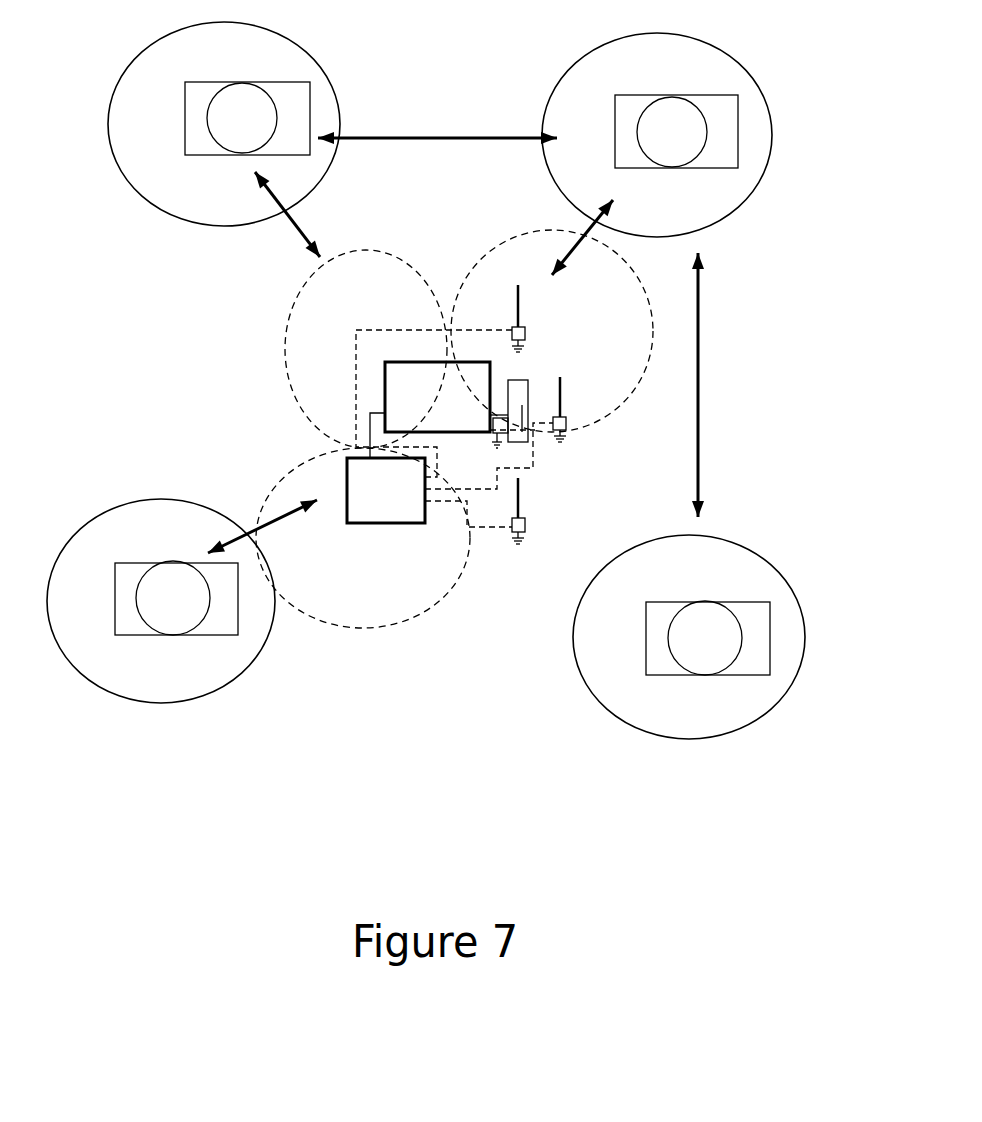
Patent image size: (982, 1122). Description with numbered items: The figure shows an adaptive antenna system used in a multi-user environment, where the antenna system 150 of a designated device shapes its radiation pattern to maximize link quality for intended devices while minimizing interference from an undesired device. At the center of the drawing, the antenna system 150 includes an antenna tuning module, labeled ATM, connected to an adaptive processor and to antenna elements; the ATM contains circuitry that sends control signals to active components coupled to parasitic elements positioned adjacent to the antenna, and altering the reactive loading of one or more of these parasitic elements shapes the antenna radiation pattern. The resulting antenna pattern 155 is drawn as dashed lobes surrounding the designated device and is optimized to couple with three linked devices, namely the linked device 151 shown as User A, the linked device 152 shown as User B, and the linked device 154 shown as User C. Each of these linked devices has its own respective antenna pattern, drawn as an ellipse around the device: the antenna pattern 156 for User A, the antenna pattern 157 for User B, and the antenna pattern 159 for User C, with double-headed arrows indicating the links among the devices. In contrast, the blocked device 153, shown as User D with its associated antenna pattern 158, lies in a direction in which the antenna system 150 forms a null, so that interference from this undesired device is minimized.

The antenna system 150 is at (470, 537).
The linked device 151 is at (208, 157).
The linked device 152 is at (705, 172).
The blocked device 153 is at (705, 603).
The linked device 154 is at (142, 560).
The antenna pattern 155 is at (345, 628).
The antenna pattern 156 is at (128, 192).
The antenna pattern 157 is at (773, 157).
The antenna pattern 158 is at (792, 583).
The antenna pattern 159 is at (192, 498).